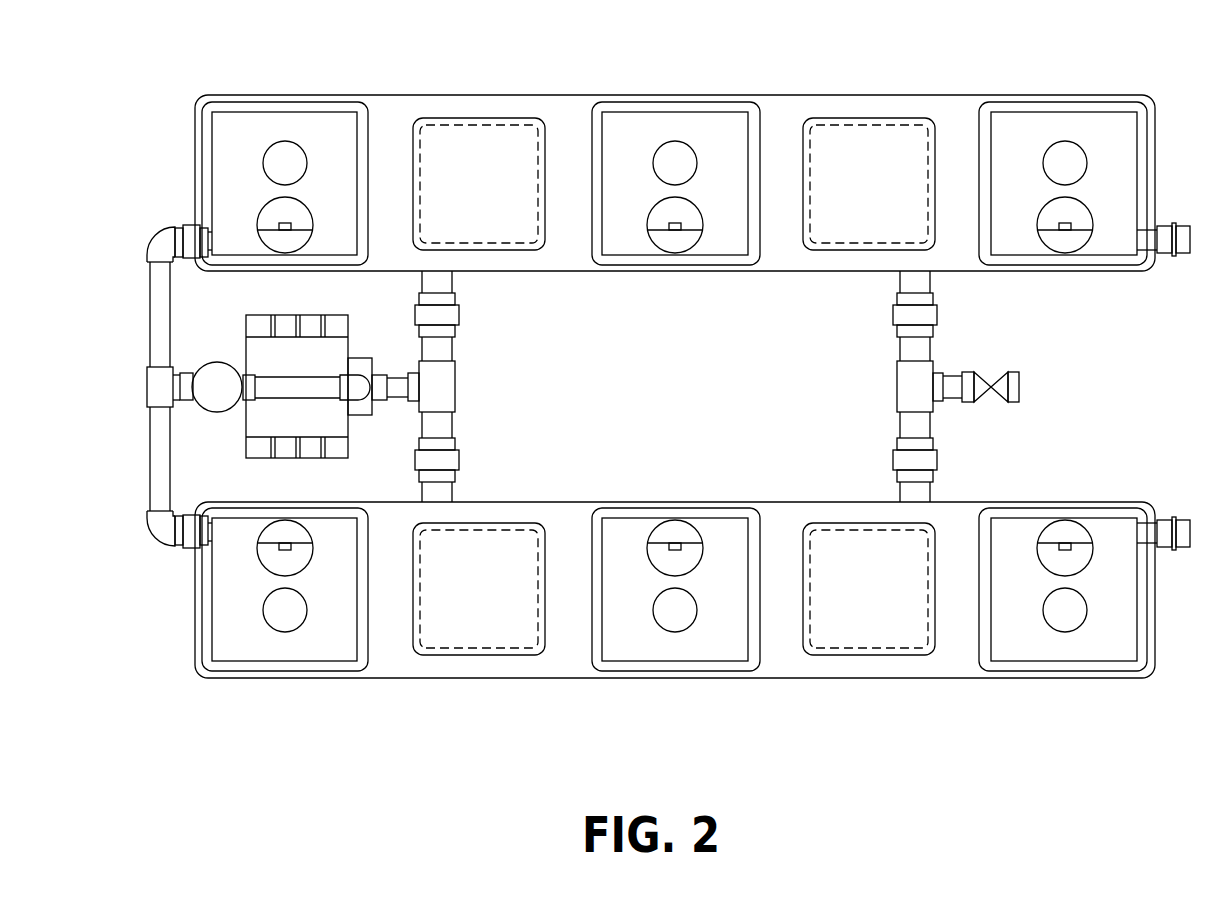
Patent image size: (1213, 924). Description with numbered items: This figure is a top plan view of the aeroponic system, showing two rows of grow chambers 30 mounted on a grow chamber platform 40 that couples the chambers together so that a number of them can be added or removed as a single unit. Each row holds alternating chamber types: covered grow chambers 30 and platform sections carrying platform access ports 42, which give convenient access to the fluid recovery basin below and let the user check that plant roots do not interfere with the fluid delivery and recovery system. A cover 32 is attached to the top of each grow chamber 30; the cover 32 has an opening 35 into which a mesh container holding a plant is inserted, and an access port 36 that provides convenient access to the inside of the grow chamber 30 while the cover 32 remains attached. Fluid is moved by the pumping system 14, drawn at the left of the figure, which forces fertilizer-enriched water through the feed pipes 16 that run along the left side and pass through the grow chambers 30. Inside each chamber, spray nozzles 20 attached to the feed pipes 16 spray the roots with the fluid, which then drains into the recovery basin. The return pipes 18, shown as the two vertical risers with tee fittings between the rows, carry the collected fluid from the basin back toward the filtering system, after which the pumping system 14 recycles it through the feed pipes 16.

The grow chamber 30 is at (188, 141).
The grow chamber platform 40 is at (562, 117).
The cover 32 is at (343, 133).
The opening 35 is at (285, 150).
The access port 36 is at (273, 227).
The platform access port 42 is at (447, 142).
The spray nozzle 20 is at (262, 542).
The feed pipe 16 is at (160, 310).
The pumping system 14 is at (260, 428).
The return pipe 18 is at (443, 348).